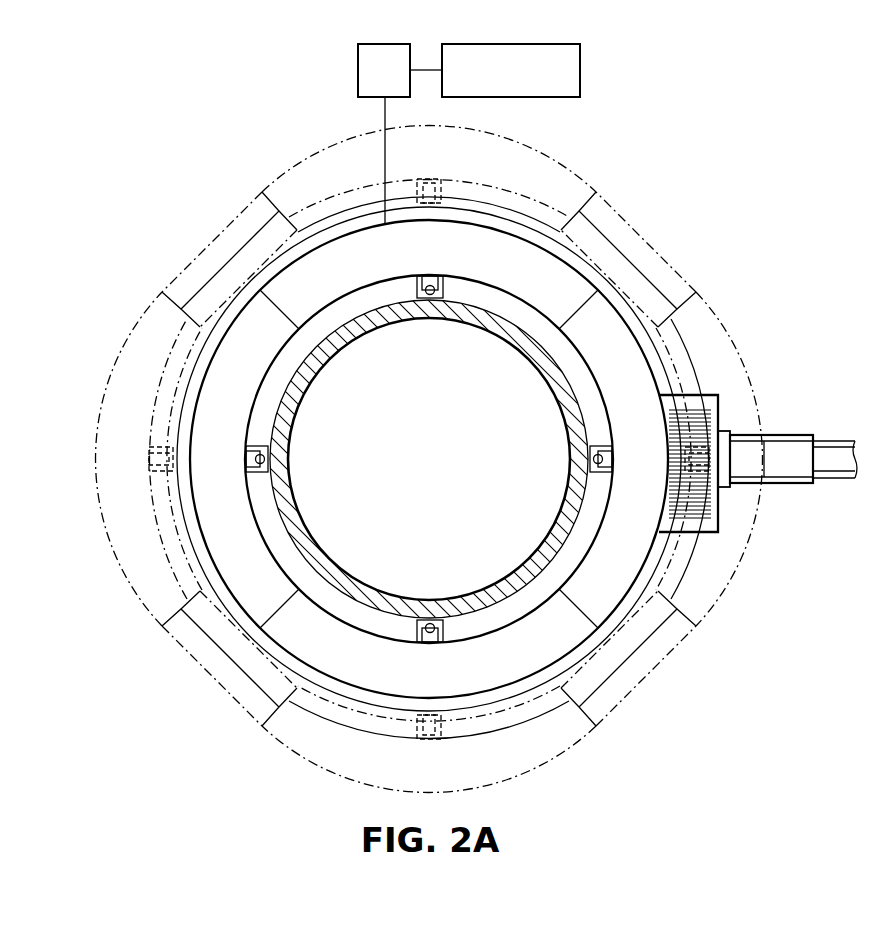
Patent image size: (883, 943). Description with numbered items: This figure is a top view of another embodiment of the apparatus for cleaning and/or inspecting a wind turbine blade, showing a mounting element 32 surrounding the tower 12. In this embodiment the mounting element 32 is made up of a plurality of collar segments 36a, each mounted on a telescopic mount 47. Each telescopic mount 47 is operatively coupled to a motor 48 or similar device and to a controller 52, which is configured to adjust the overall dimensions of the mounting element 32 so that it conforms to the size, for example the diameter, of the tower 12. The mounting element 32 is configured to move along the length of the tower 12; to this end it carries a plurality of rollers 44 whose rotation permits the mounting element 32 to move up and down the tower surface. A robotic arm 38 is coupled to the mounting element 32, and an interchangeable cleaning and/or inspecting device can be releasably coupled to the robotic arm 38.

The tower 12 is at (351, 314).
The mounting element 32 is at (207, 358).
The collar segments 36a is at (516, 140).
The robotic arm 38 is at (800, 434).
The rollers 44 is at (430, 292).
The telescopic mount 47 is at (225, 266).
The motor 48 is at (370, 44).
The controller 52 is at (462, 44).